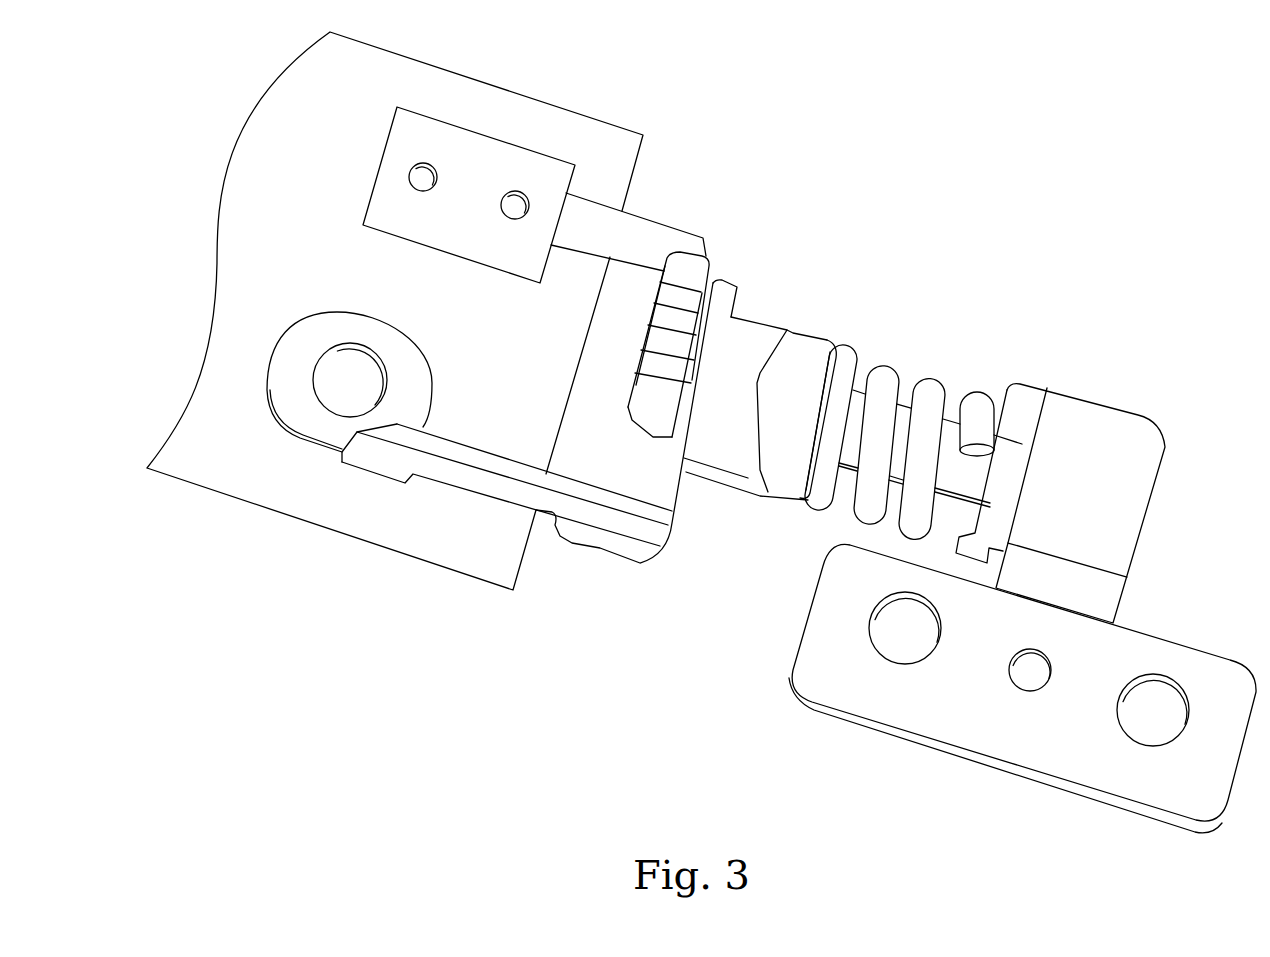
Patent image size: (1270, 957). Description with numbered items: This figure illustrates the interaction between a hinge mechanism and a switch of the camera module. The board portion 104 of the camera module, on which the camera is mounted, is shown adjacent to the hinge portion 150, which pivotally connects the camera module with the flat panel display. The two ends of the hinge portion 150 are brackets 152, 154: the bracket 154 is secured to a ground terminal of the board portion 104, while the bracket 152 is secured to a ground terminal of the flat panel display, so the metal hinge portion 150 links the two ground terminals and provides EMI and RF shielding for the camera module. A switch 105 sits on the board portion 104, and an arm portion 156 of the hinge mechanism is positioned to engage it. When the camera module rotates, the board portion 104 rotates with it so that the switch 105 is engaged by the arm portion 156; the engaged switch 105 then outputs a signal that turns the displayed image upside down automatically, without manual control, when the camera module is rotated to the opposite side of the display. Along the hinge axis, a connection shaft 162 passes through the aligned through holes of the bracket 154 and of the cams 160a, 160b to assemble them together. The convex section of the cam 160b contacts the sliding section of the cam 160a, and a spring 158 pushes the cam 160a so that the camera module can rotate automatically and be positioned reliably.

The board portion 104 is at (518, 120).
The switch 105 is at (395, 175).
The hinge portion 150 is at (777, 524).
The bracket 152 is at (997, 723).
The bracket 154 is at (380, 460).
The arm portion 156 is at (693, 258).
The spring 158 is at (927, 390).
The cam 160a is at (803, 367).
The cam 160b is at (753, 343).
The connection shaft 162 is at (953, 457).